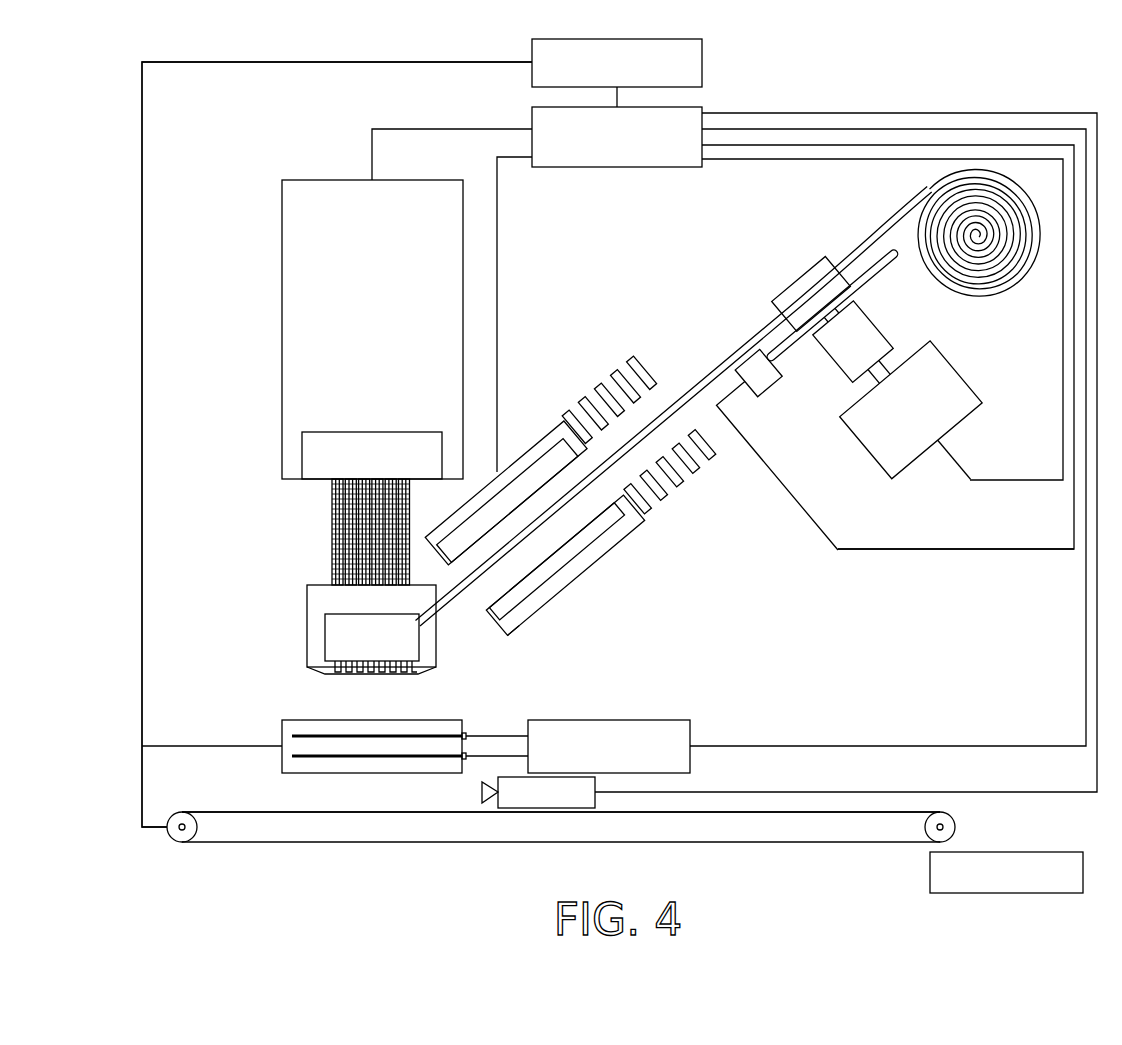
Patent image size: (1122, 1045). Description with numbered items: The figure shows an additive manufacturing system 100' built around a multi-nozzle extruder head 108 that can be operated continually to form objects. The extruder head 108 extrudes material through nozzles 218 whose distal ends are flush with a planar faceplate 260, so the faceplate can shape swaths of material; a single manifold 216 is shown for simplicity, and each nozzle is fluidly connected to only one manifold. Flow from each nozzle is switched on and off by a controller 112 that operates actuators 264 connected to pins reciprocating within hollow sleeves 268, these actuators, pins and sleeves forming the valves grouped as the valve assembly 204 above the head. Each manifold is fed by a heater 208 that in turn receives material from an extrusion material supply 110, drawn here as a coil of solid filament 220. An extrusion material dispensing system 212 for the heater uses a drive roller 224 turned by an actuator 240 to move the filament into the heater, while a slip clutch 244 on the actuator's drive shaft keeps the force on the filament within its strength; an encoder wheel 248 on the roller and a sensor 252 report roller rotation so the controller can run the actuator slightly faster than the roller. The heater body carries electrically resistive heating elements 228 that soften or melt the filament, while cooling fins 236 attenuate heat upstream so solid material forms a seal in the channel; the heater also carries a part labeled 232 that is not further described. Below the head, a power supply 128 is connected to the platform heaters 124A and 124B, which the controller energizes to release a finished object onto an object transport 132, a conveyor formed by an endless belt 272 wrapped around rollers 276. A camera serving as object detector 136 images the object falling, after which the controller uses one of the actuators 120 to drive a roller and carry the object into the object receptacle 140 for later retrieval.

The additive manufacturing system 100' is at (337, 444).
The multi-nozzle extruder head 108 is at (308, 584).
The extrusion material supply 110 is at (1022, 272).
The controller 112 is at (619, 168).
The actuators 120 is at (702, 65).
The heater 124A is at (383, 735).
The heater 124B is at (370, 757).
The power supply 128 is at (617, 720).
The object transport 132 is at (323, 851).
The object detector 136 is at (545, 808).
The object receptacle 140 is at (1020, 852).
The valve assembly 204 is at (337, 180).
The heater 208 is at (569, 598).
The extrusion material dispensing system 212 is at (848, 466).
The manifold 216 is at (420, 648).
The nozzles 218 is at (343, 676).
The extrusion material filament 220 is at (858, 238).
The drive roller 224 is at (795, 282).
The heating elements 228 is at (545, 440).
The clamp actuator 232 is at (497, 590).
The cooling fins 236 is at (627, 348).
The actuator 240 is at (958, 368).
The slip clutch 244 is at (905, 342).
The encoder wheel 248 is at (790, 340).
The sensor 252 is at (768, 418).
The faceplate 260 is at (418, 673).
The actuators 264 is at (385, 431).
The sleeves 268 is at (331, 492).
The endless belt 272 is at (845, 811).
The roller 276 is at (183, 826).